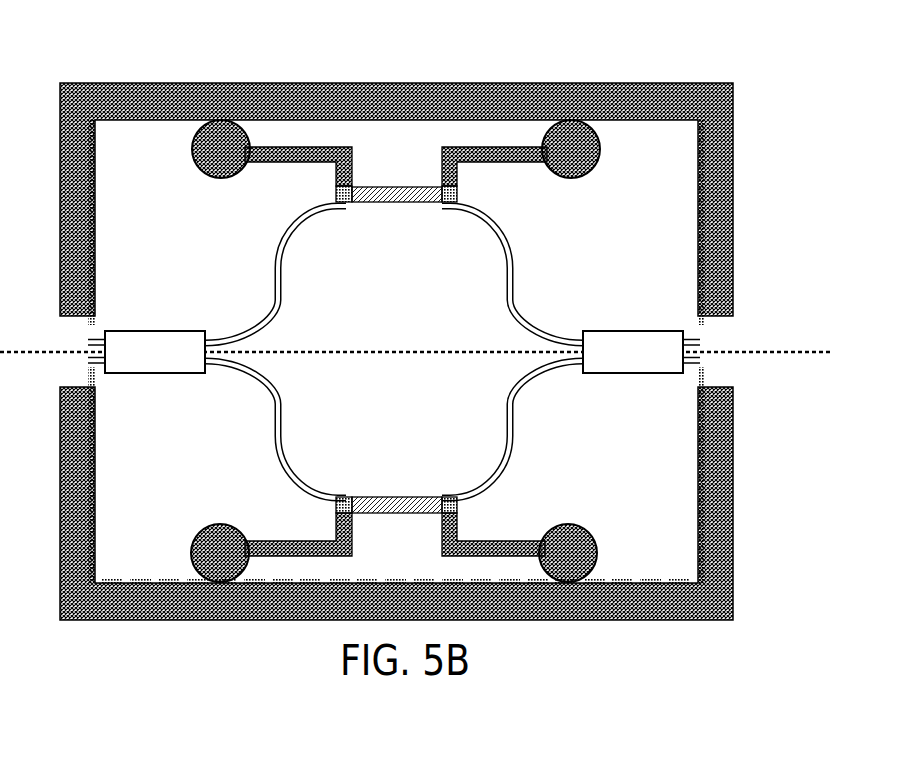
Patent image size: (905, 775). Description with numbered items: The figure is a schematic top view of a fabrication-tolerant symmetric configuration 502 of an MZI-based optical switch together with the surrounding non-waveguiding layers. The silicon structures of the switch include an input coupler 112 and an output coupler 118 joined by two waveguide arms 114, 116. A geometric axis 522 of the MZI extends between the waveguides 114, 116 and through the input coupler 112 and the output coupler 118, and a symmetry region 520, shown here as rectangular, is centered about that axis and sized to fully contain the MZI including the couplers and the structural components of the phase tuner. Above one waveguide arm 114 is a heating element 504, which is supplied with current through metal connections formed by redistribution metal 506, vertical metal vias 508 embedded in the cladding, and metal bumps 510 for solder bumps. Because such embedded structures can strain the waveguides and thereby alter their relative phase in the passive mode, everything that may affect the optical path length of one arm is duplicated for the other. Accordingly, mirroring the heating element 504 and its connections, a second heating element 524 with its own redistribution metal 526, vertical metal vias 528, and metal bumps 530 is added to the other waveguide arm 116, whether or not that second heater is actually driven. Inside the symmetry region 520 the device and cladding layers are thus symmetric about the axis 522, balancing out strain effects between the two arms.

The symmetric configuration 502 is at (416, 322).
The heating element 504 is at (396, 203).
The redistribution metal 506 is at (495, 162).
The vertical metal vias 508 is at (347, 203).
The metal bumps 510 is at (598, 160).
The input coupler 112 is at (167, 330).
The waveguide arm 114 is at (528, 315).
The waveguide arm 116 is at (513, 422).
The output coupler 118 is at (627, 330).
The symmetry region 520 is at (400, 130).
The geometric axis 522 is at (393, 350).
The second heating element 524 is at (396, 497).
The redistribution metal 526 is at (510, 541).
The vertical metal vias 528 is at (340, 496).
The metal bumps 530 is at (585, 530).